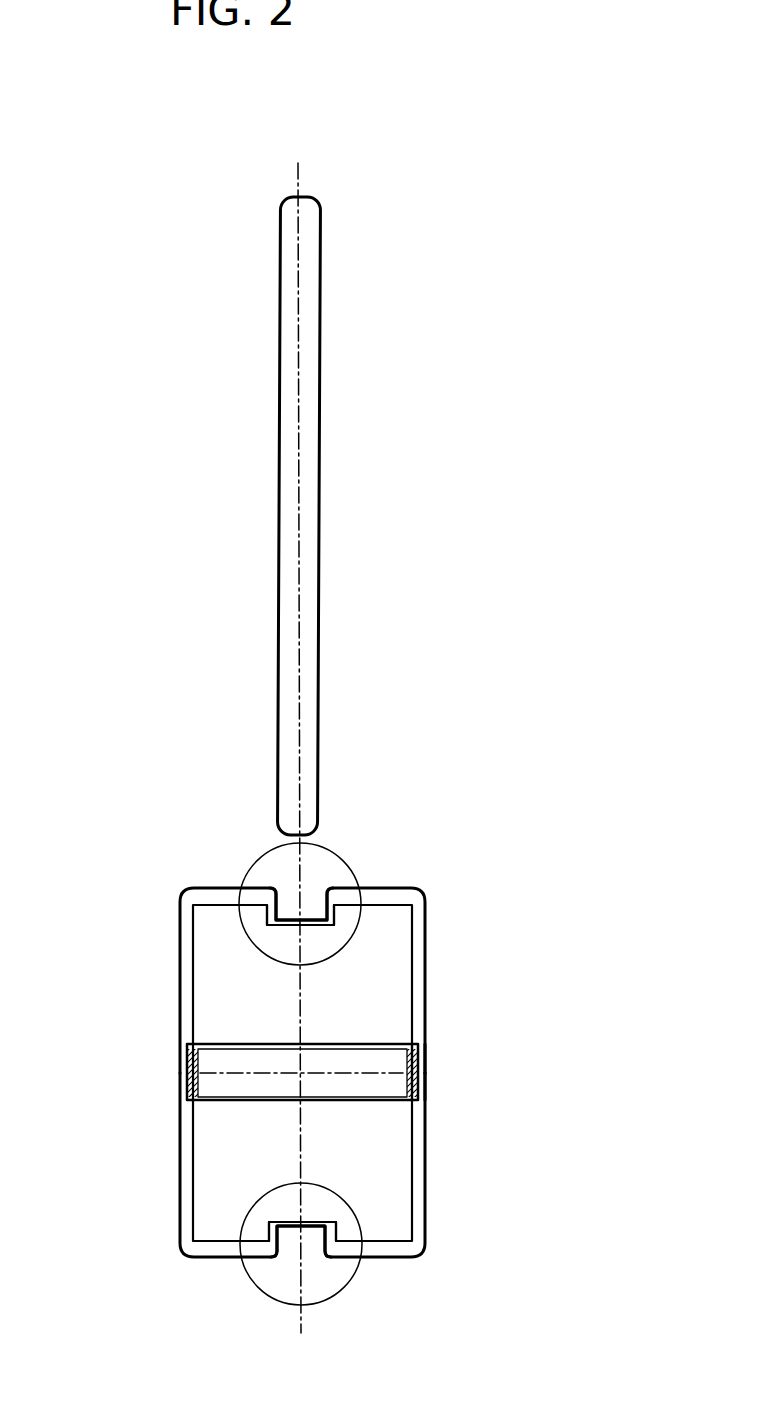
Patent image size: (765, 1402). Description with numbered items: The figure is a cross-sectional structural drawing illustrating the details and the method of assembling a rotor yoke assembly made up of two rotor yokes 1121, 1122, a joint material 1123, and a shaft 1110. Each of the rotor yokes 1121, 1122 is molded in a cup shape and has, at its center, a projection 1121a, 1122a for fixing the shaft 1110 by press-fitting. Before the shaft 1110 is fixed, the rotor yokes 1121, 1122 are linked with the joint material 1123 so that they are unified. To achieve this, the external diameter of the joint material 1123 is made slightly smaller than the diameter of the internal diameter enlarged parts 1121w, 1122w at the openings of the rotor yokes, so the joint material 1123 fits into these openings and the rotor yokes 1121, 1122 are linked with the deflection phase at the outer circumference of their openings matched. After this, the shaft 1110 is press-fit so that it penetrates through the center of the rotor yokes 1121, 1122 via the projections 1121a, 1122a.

The shaft 1110 is at (278, 578).
The rotor yoke 1121 is at (180, 926).
The rotor yoke 1122 is at (182, 1203).
The projection 1121a is at (248, 865).
The projection 1122a is at (247, 1275).
The joint material 1123 is at (188, 1063).
The internal diameter enlarged part 1121w is at (422, 1060).
The internal diameter enlarged part 1122w is at (422, 1087).